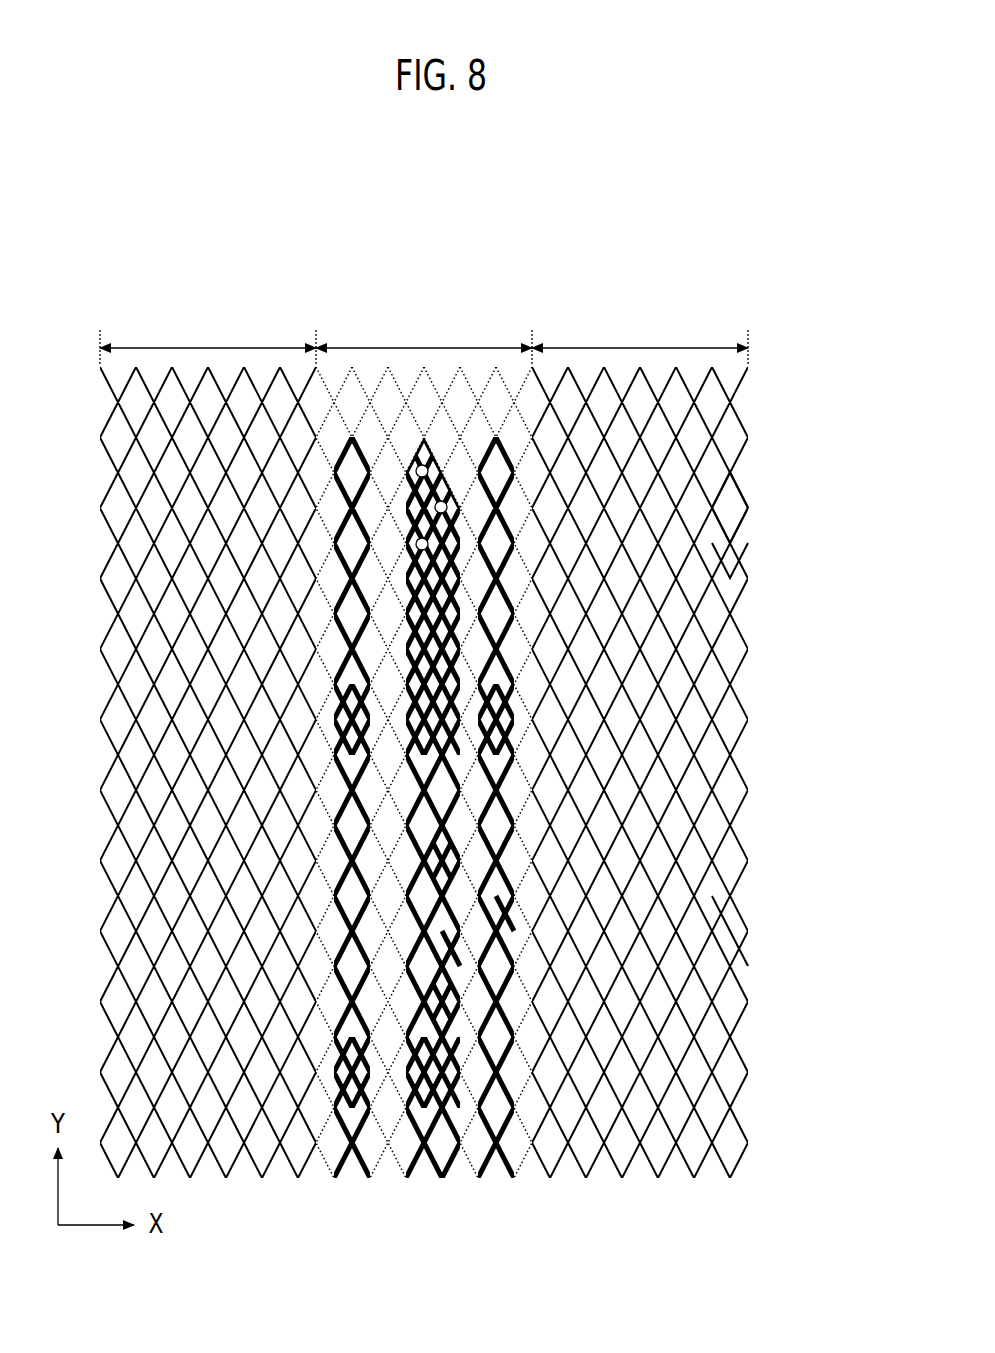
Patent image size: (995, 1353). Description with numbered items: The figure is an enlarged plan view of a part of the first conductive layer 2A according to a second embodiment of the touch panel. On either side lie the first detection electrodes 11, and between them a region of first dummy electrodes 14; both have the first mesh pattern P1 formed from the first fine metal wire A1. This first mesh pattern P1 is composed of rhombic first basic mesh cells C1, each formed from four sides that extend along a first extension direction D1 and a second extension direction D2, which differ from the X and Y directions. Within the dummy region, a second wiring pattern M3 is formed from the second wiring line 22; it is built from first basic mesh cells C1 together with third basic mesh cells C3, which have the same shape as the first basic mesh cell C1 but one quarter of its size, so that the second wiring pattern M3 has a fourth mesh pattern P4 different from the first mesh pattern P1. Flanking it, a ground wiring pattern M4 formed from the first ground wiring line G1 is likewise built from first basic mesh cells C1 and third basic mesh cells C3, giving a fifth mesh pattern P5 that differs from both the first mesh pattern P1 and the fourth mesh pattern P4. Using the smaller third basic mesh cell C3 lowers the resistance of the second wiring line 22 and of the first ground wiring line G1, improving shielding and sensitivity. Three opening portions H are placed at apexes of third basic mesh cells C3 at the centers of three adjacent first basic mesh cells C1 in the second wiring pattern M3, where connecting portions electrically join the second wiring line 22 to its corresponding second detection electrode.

The first conductive layer 2A is at (774, 364).
The first detection electrode 11 is at (424, 339).
The first dummy electrode 14 is at (424, 339).
The first ground wiring line G1 is at (360, 1175).
The second wiring line 22 is at (432, 1170).
The third basic mesh cell C3 is at (350, 1097).
The opening portion H is at (418, 470).
The second wiring pattern M3 is at (445, 480).
The ground wiring pattern M4 is at (500, 452).
The first fine metal wire A1 is at (742, 490).
The first mesh pattern P1 is at (740, 562).
The first extension direction D1 is at (782, 628).
The second extension direction D2 is at (753, 757).
The first basic mesh cell C1 is at (730, 922).
The fourth mesh pattern P4 is at (455, 945).
The fifth mesh pattern P5 is at (505, 915).